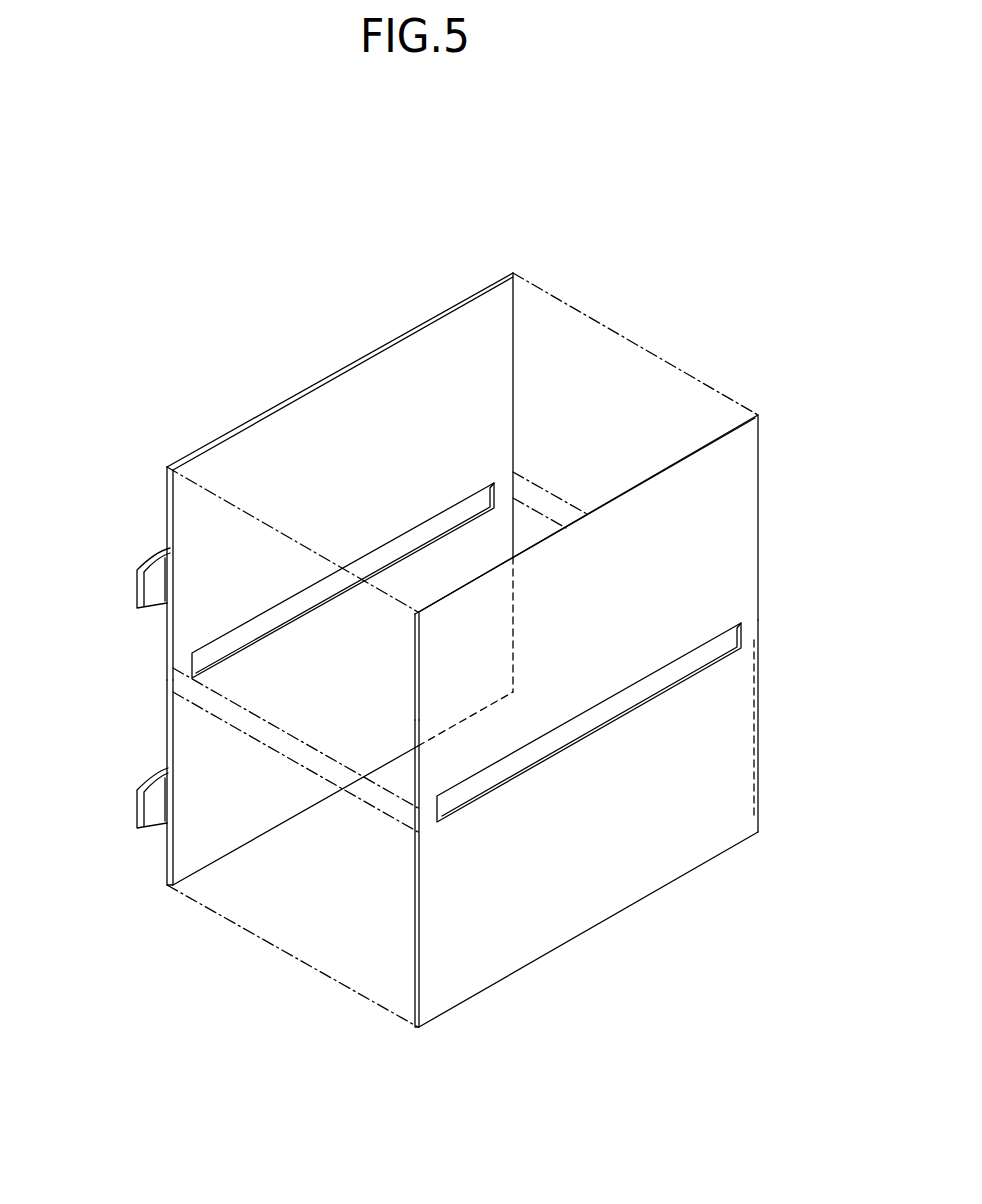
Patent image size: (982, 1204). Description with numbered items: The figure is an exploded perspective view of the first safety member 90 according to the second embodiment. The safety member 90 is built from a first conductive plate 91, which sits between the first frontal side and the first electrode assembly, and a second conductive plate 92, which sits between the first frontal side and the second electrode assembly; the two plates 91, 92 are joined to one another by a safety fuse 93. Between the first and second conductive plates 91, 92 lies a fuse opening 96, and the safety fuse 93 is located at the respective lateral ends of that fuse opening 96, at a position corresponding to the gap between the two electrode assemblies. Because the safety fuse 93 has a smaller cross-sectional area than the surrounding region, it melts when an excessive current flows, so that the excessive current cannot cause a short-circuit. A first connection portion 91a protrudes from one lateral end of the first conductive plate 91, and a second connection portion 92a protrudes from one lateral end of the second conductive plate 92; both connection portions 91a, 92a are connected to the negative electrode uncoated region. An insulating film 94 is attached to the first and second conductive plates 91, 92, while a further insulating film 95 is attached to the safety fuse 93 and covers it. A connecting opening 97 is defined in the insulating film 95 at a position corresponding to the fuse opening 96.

The first safety member 90 is at (371, 349).
The first conductive plate 91 is at (302, 393).
The first connection portion 91a is at (145, 567).
The second conductive plate 92 is at (167, 733).
The second connection portion 92a is at (138, 808).
The safety fuse 93 is at (505, 493).
The insulating film 94 is at (743, 508).
The insulating film 95 is at (604, 905).
The fuse opening 96 is at (445, 506).
The connecting opening 97 is at (717, 633).